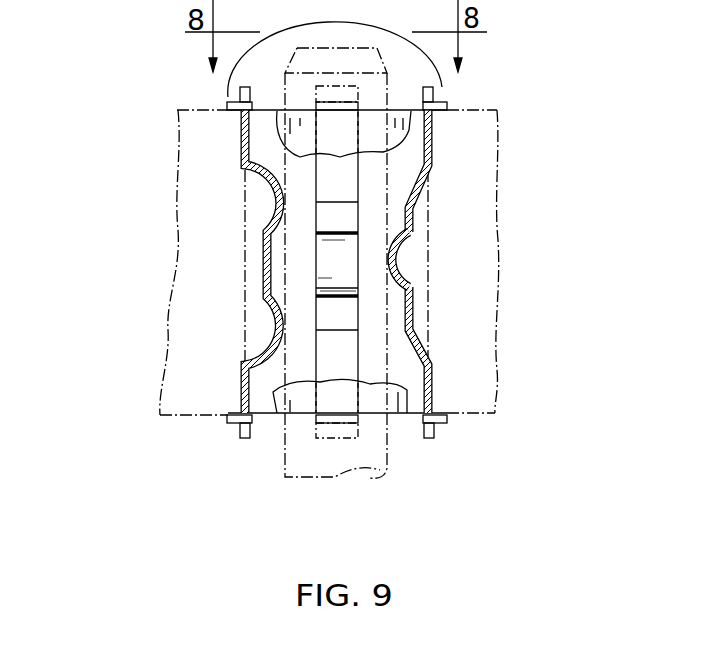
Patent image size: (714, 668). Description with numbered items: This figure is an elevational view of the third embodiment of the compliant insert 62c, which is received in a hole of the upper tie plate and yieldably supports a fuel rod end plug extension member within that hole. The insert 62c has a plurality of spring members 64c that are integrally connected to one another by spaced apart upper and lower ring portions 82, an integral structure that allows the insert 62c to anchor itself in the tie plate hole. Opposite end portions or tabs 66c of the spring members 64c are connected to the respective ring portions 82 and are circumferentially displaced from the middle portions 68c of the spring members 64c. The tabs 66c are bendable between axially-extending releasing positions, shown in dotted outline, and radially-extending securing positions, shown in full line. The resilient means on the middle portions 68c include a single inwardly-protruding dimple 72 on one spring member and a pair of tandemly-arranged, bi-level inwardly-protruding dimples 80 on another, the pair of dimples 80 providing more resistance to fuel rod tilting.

The compliant insert 62c is at (453, 146).
The spring members 64c is at (415, 315).
The tabs 66c is at (338, 102).
The middle portions 68c is at (265, 267).
The inwardly-protruding dimple 72 is at (392, 262).
The pair of tandemly-arranged inwardly-protruding dimples 80 is at (275, 337).
The ring portions 82 is at (263, 133).